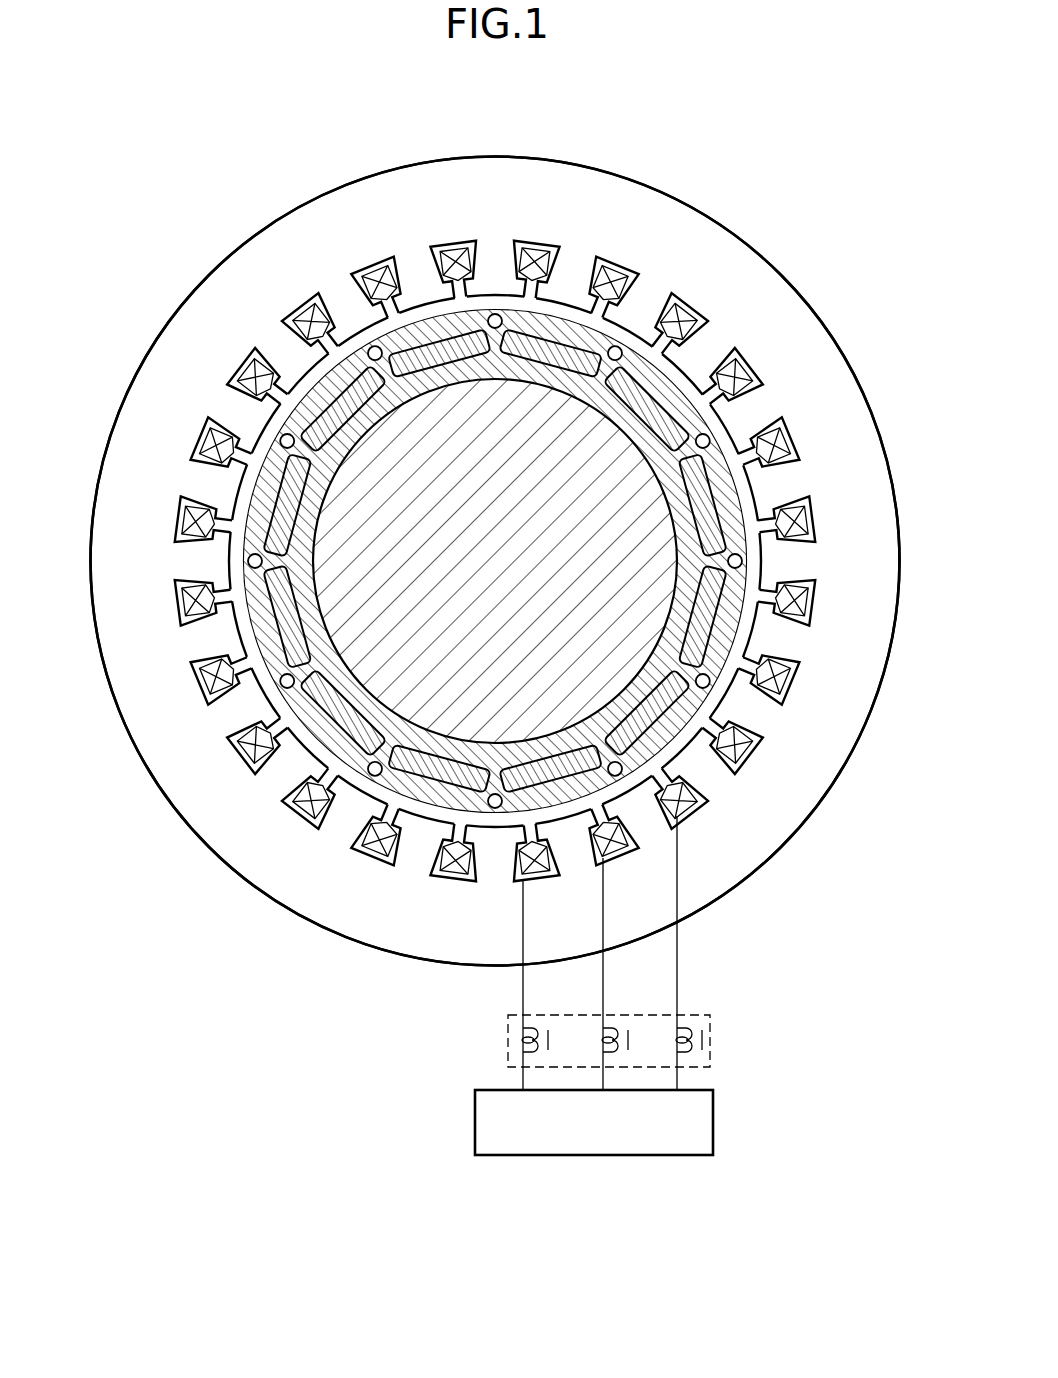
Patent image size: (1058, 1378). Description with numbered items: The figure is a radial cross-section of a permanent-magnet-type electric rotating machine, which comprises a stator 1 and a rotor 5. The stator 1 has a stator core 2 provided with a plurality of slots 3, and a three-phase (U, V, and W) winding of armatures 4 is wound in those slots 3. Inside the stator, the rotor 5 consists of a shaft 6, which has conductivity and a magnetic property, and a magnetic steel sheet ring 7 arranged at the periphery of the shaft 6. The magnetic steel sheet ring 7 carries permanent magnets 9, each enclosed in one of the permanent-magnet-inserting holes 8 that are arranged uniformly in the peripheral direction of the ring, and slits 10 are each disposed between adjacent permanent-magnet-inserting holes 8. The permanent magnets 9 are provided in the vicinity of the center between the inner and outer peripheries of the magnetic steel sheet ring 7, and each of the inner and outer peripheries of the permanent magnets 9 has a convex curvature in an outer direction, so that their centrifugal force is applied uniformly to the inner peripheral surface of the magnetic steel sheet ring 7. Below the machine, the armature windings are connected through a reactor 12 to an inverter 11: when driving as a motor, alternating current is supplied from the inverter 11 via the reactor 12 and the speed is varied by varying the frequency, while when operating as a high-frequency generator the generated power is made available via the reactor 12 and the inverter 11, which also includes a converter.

The stator 1 is at (741, 226).
The stator core 2 is at (775, 313).
The slots 3 is at (618, 262).
The armatures 4 is at (537, 248).
The rotor 5 is at (730, 686).
The shaft 6 is at (383, 652).
The magnetic steel sheet ring 7 is at (320, 383).
The permanent-magnet-inserting holes 8 is at (392, 340).
The permanent magnets 9 is at (433, 333).
The slits 10 is at (283, 437).
The inverter 11 is at (605, 1140).
The reactor 12 is at (712, 1027).